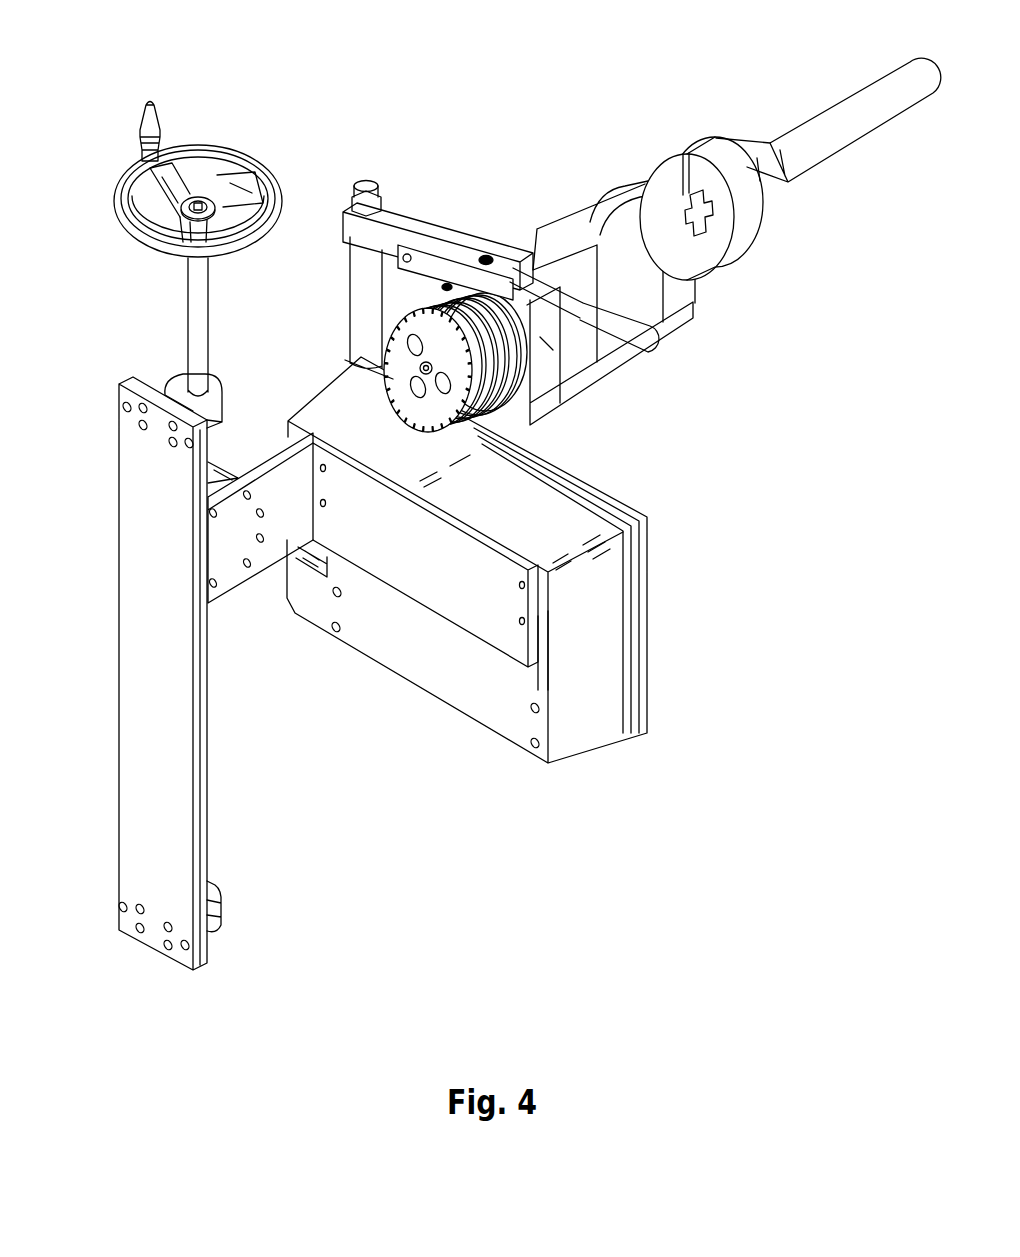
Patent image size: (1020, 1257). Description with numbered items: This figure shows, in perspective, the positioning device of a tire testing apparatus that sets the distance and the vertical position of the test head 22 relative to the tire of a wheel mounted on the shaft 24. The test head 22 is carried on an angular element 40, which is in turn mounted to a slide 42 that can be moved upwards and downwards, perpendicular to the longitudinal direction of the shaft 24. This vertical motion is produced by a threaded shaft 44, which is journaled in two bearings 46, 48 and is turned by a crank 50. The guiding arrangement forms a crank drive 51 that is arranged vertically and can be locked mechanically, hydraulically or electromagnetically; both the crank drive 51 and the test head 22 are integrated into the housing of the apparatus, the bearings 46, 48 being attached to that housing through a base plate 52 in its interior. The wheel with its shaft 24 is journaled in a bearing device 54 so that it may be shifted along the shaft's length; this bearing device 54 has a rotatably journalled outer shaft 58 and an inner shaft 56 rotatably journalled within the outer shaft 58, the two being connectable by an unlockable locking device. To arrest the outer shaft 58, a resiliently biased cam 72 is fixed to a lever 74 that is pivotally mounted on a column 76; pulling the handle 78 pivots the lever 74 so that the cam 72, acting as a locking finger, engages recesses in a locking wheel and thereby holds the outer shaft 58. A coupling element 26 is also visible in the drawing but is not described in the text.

The test head 22 is at (588, 728).
The shaft 24 is at (851, 80).
The coupling 26 is at (700, 148).
The angular element 40 is at (461, 593).
The slide 42 is at (221, 472).
The threaded shaft 44 is at (198, 298).
The bearing 46 is at (215, 387).
The bearing 48 is at (212, 918).
The crank 50 is at (152, 117).
The crank drive 51 is at (122, 359).
The base plate 52 is at (138, 666).
The bearing device 54 is at (582, 178).
The inner shaft 56 is at (838, 140).
The outer shaft 58 is at (563, 272).
The cam 72 is at (427, 263).
The lever 74 is at (445, 240).
The column 76 is at (365, 290).
The handle 78 is at (650, 345).